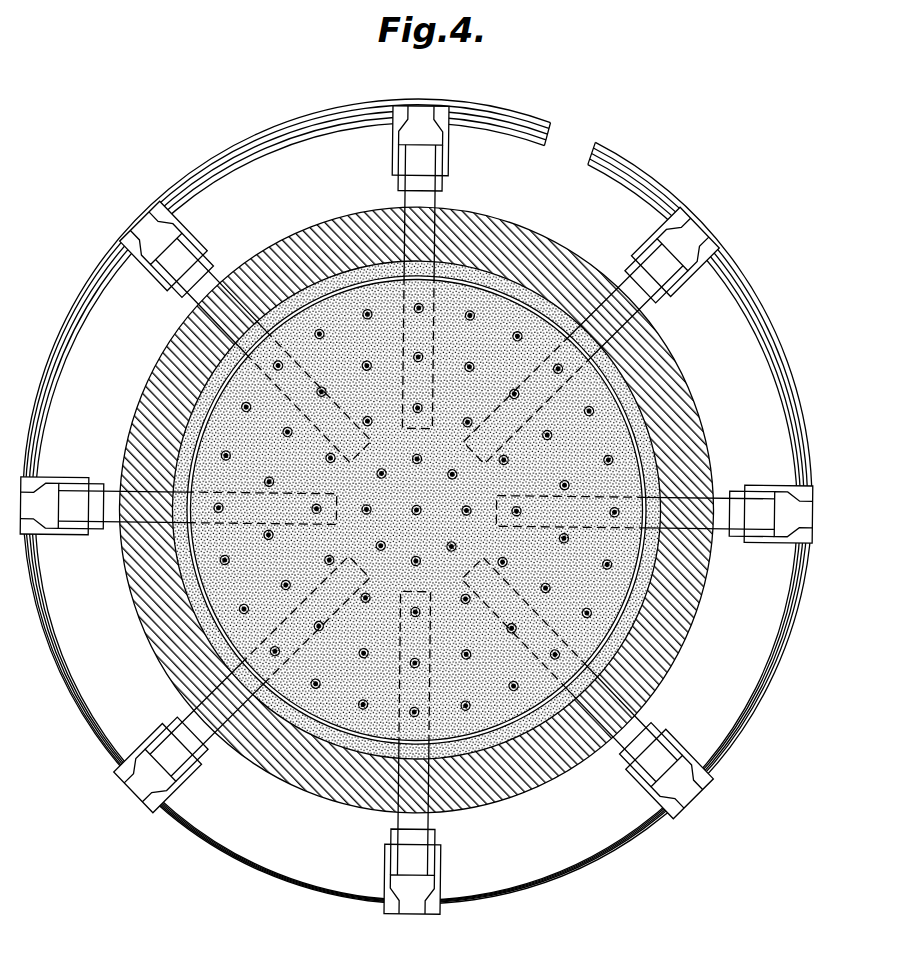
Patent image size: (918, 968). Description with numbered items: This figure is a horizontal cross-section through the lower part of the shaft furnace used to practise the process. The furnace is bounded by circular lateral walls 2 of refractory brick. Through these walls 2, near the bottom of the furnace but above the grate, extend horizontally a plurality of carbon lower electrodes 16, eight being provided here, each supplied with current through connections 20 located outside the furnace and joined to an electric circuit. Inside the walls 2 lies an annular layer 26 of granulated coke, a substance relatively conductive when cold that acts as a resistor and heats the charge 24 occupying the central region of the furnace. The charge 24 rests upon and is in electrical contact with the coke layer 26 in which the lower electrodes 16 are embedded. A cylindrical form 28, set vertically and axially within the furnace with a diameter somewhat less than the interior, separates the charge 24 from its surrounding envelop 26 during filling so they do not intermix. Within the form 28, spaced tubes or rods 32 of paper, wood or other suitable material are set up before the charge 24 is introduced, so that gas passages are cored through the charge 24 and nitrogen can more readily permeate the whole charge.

The walls 2 is at (162, 373).
The lower electrodes 16 is at (435, 194).
The connections 20 is at (281, 136).
The charge 24 is at (610, 588).
The layer of granulated coke 26 is at (638, 423).
The cylindrical form 28 is at (222, 352).
The tubes or rods 32 is at (362, 706).